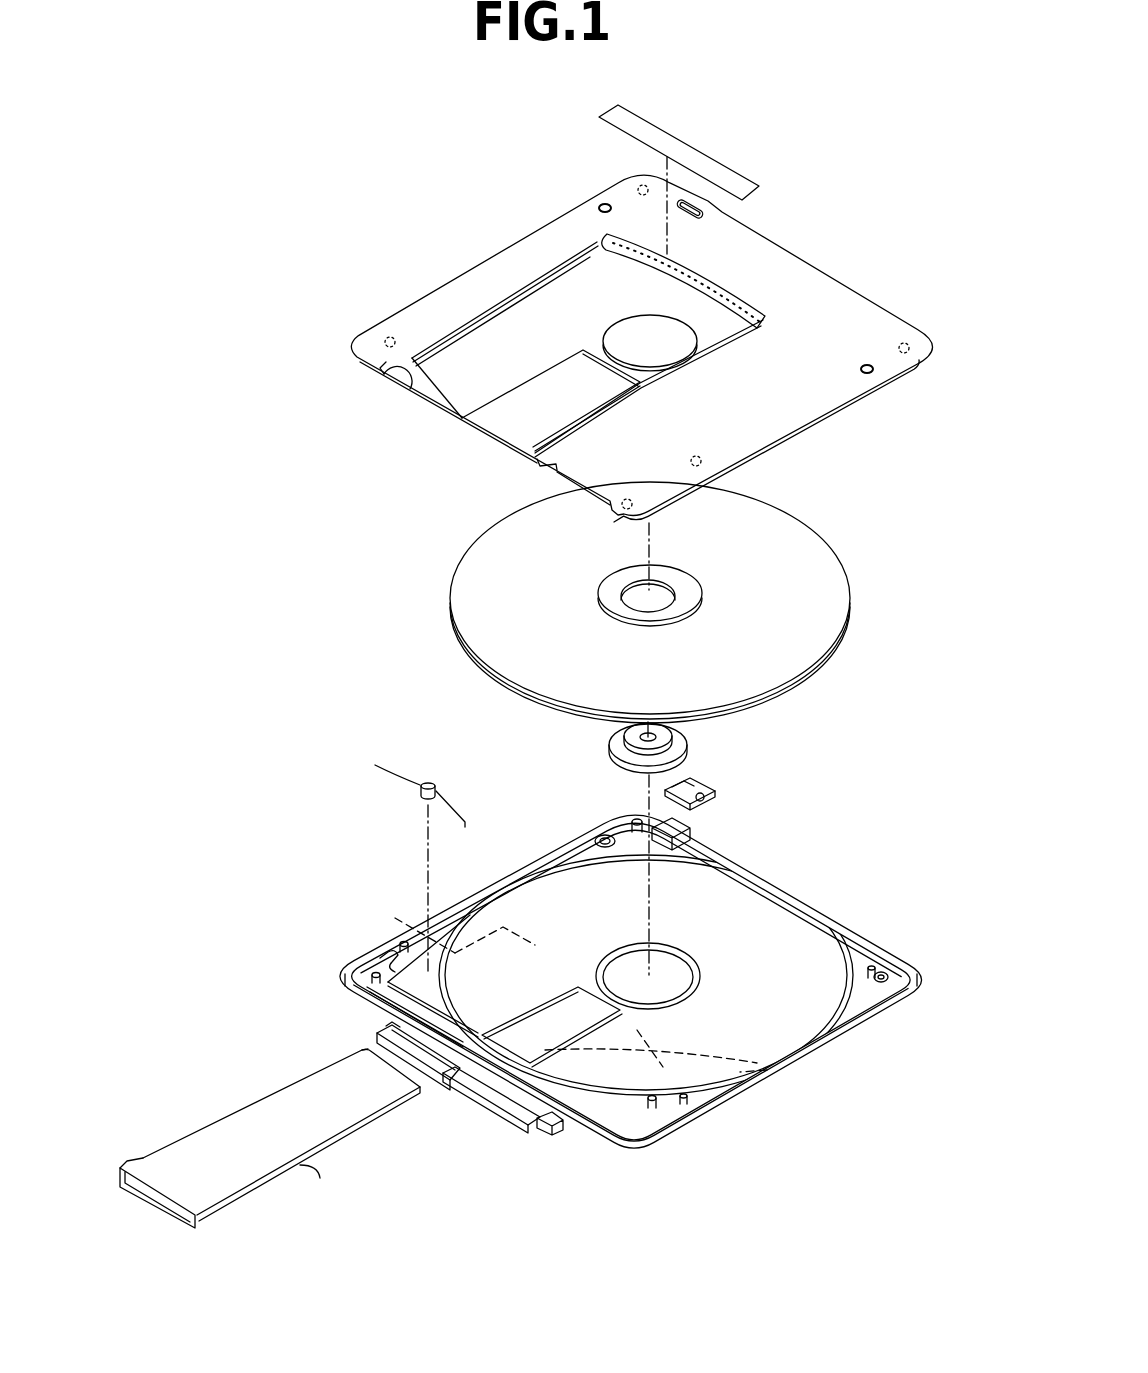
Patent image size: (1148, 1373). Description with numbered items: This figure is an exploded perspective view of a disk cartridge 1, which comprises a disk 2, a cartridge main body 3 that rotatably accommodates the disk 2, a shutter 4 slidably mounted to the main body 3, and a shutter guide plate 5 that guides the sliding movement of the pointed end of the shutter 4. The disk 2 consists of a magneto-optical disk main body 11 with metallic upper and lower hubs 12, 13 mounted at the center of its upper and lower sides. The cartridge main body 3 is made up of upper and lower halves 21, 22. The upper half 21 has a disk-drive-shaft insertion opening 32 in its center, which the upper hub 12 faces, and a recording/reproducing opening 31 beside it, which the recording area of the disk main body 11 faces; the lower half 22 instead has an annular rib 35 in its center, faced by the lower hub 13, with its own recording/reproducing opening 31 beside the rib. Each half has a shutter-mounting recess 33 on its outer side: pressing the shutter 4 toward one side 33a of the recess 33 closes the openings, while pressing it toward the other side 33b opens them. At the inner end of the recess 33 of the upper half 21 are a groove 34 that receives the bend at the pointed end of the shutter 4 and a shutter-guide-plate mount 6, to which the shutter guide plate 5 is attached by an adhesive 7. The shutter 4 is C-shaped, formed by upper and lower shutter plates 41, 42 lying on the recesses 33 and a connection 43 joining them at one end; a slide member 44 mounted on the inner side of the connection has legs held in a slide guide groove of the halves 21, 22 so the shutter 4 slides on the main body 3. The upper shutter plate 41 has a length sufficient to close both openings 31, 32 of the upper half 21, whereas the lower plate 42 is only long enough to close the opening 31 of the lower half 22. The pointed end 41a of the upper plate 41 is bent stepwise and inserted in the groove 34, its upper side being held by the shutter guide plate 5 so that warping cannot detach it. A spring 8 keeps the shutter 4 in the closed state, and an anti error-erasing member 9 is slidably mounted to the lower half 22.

The disk cartridge 1 is at (287, 537).
The disk 2 is at (335, 563).
The magneto-optical disk main body 11 is at (486, 624).
The upper hub 12 is at (606, 587).
The lower hub 13 is at (608, 742).
The cartridge main body 3 is at (917, 545).
The upper half 21 is at (808, 444).
The lower half 22 is at (790, 864).
The recording/reproducing opening 31 is at (463, 342).
The disk-drive-shaft insertion opening 32 is at (557, 377).
The shutter-mounting recess 33 is at (463, 340).
The one side of the shutter-mounting recess 33a is at (553, 462).
The another side of the shutter-mounting recess 33b is at (398, 370).
The groove 34 is at (594, 246).
The annular rib 35 is at (619, 940).
The shutter 4 is at (173, 1142).
The upper shutter plate 41 is at (360, 1128).
The pointed end 41a is at (362, 1050).
The lower shutter plate 42 is at (385, 1162).
The connection 43 is at (222, 1222).
The slide member 44 is at (500, 1127).
The shutter guide plate 5 is at (713, 152).
The shutter-guide-plate mount 6 is at (632, 341).
The adhesive 7 is at (600, 236).
The spring 8 is at (400, 787).
The anti error-erasing member 9 is at (706, 782).